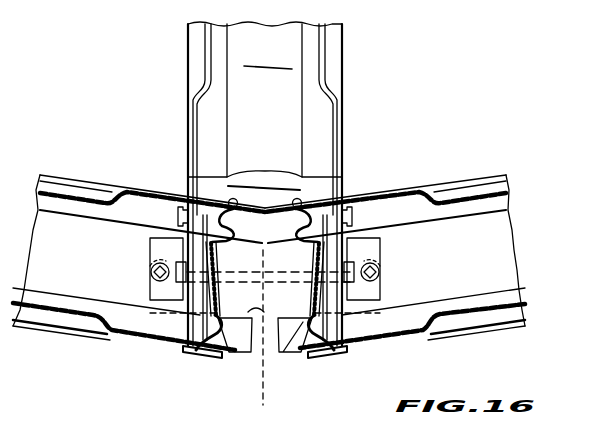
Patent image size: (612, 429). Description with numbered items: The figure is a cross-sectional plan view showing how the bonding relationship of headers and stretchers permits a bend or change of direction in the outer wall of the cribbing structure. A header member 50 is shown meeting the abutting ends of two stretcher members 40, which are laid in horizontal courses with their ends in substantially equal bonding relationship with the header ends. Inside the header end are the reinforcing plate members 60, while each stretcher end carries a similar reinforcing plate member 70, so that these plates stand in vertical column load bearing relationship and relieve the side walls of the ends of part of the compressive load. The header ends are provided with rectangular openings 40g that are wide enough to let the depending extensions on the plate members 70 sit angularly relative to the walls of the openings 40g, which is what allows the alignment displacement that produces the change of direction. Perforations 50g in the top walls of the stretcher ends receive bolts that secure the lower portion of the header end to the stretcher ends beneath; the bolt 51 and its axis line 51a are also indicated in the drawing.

The stretcher member 40 is at (112, 192).
The rectangular openings 40g is at (218, 360).
The header member 50 is at (188, 66).
The perforations 50g is at (158, 262).
The bolt 51 is at (150, 278).
The bolt axis line 51a is at (150, 266).
The plate member 60 is at (240, 228).
The reinforcing plate member 70 is at (218, 258).